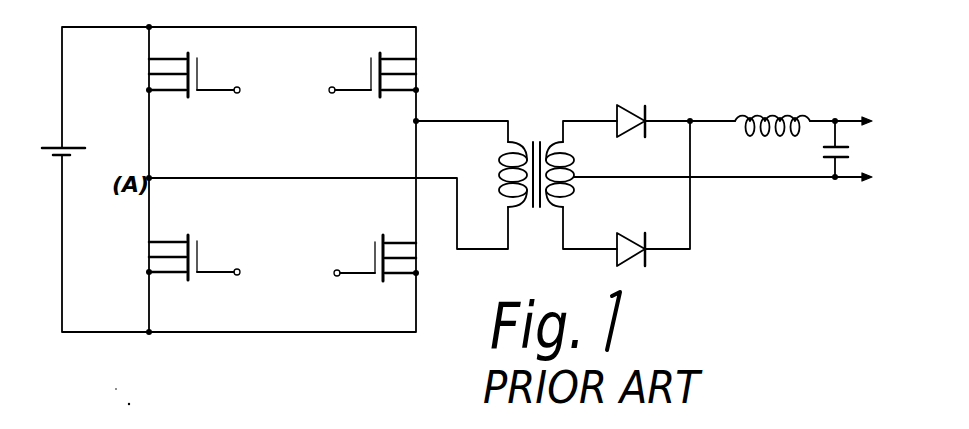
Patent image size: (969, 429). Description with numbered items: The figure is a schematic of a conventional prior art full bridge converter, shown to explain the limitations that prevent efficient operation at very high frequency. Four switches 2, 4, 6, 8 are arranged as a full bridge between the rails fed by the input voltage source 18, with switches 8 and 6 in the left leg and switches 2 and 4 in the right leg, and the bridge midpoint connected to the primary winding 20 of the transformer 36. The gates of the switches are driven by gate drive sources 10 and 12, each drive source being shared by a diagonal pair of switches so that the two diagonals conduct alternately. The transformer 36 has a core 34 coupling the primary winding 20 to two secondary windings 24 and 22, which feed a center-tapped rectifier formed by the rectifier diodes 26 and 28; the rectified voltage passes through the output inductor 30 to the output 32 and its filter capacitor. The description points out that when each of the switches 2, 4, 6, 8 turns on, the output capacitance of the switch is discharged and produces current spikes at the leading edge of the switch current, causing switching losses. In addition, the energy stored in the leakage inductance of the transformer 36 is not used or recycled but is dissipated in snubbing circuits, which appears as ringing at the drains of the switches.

The switch 2 is at (423, 63).
The switch 4 is at (420, 272).
The switch 6 is at (145, 265).
The switch 8 is at (145, 79).
The gate drive voltage source VS1 10 is at (330, 96).
The gate drive voltage source VS2 12 is at (243, 88).
The input voltage source Vin 18 is at (44, 153).
The transformer primary winding L1 20 is at (507, 183).
The transformer secondary winding L3 22 is at (572, 197).
The transformer secondary winding L2 24 is at (577, 170).
The output rectifier diode D01 26 is at (648, 112).
The output rectifier diode D02 28 is at (655, 255).
The output inductor Lo 30 is at (784, 136).
The output terminals with capacitor Co 32 is at (847, 160).
The transformer core 34 is at (540, 142).
The transformer 36 is at (575, 150).